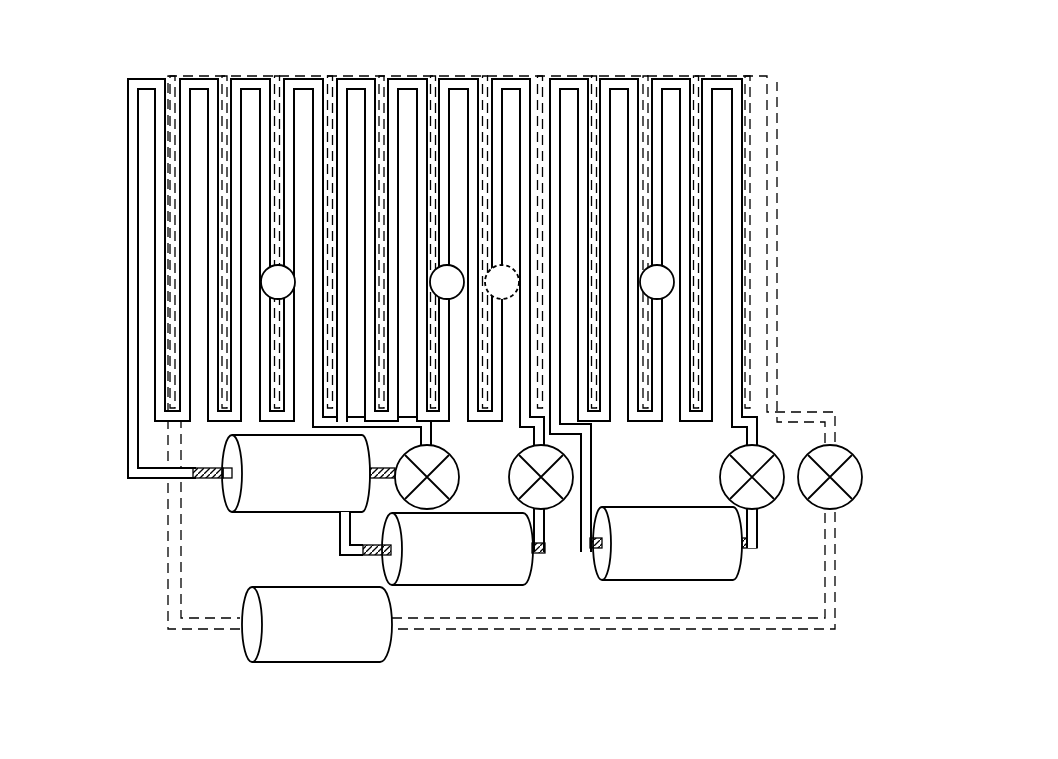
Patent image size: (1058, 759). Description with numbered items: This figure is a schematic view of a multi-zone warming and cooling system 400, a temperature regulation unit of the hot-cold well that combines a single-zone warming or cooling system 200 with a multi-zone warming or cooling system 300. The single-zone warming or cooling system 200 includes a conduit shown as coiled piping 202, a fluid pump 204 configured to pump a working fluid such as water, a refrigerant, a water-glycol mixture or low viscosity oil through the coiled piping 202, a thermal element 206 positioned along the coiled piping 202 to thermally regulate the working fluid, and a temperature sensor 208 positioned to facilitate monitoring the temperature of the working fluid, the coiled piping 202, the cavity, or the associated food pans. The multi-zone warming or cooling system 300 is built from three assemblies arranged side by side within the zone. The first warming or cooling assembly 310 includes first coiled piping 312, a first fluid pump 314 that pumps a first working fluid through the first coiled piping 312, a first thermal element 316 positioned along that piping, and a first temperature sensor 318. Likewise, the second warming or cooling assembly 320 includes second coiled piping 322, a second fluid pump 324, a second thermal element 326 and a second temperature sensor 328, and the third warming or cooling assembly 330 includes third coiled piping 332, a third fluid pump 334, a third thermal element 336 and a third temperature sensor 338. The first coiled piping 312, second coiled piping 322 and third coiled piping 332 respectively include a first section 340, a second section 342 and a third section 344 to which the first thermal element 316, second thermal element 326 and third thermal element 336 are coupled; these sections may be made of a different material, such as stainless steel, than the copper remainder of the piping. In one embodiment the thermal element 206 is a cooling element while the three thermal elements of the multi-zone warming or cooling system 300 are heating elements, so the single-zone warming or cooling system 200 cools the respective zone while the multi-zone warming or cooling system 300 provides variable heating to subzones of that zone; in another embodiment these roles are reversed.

The single-zone warming or cooling system 200 is at (210, 657).
The coiled piping 202 is at (172, 566).
The fluid pump 204 is at (862, 477).
The thermal element 206 is at (312, 648).
The temperature sensor 208 is at (519, 283).
The multi-zone warming or cooling system 300 is at (153, 499).
The first warming or cooling assembly 310 is at (286, 305).
The first coiled piping 312 is at (148, 80).
The first fluid pump 314 is at (433, 453).
The first thermal element 316 is at (323, 498).
The first temperature sensor 318 is at (266, 292).
The second warming or cooling assembly 320 is at (587, 344).
The second coiled piping 322 is at (420, 79).
The second fluid pump 324 is at (546, 511).
The second thermal element 326 is at (470, 582).
The second temperature sensor 328 is at (438, 270).
The third warming or cooling assembly 330 is at (700, 347).
The third coiled piping 332 is at (630, 79).
The third fluid pump 334 is at (763, 496).
The third thermal element 336 is at (676, 566).
The third temperature sensor 338 is at (672, 276).
The first section 340 is at (233, 510).
The second section 342 is at (368, 555).
The third section 344 is at (752, 556).
The multi-zone warming and cooling system 400 is at (488, 376).